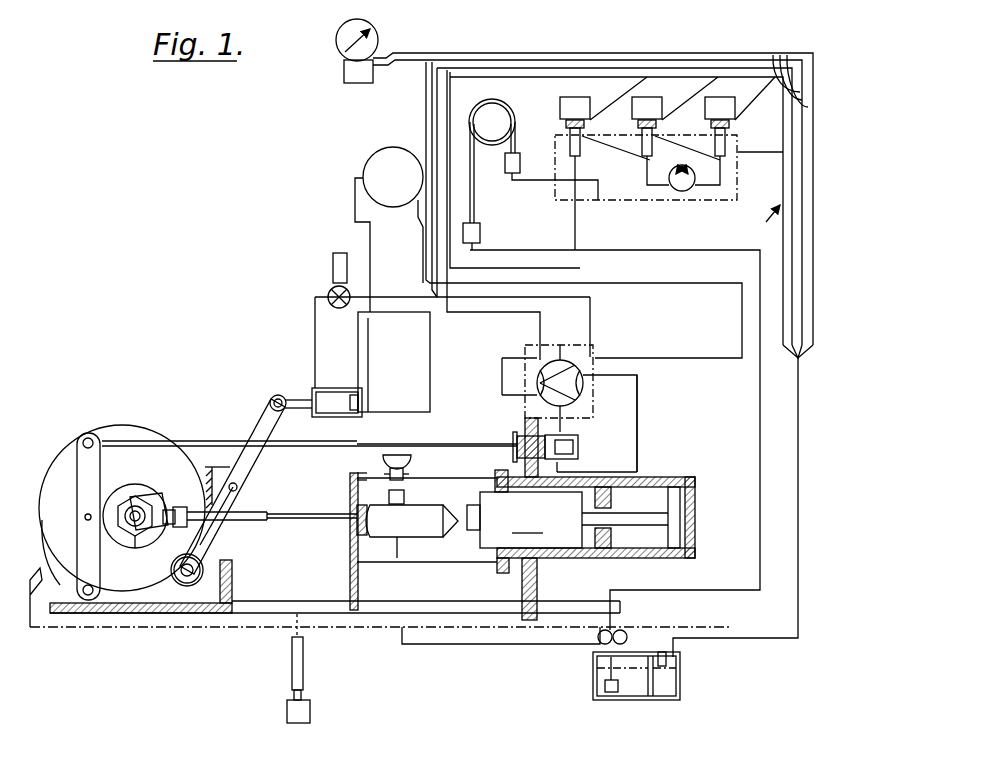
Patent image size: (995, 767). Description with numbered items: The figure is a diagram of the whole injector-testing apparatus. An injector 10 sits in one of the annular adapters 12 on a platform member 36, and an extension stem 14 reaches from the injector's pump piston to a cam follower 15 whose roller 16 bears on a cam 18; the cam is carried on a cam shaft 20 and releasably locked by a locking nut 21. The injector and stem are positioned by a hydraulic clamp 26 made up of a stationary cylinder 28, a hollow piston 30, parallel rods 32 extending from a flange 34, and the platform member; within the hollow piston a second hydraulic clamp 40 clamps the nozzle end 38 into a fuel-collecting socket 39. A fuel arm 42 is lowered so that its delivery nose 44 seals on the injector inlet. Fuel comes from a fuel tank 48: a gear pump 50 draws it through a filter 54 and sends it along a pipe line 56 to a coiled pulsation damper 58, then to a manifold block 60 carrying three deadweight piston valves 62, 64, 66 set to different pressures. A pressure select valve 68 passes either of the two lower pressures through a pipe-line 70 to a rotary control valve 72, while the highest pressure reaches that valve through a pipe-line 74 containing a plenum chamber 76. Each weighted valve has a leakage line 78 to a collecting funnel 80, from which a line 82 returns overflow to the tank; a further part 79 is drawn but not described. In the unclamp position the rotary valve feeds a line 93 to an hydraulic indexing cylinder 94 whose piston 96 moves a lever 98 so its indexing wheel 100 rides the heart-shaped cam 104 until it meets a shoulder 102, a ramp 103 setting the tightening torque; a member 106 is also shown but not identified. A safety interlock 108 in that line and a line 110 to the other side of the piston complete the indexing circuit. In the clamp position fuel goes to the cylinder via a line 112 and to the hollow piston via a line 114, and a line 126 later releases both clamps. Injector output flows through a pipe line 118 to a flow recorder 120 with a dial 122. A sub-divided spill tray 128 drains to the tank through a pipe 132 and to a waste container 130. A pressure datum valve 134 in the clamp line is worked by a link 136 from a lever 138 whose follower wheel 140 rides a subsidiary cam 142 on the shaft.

The injector 10 is at (413, 530).
The annular adapters 12 is at (368, 530).
The extension stem 14 is at (305, 512).
The cam follower 15 is at (254, 510).
The roller or wheel 16 is at (212, 466).
The cam 18 is at (142, 540).
The cam shaft 20 is at (137, 538).
The locking nut 21 is at (133, 527).
The hydraulic clamp 26 is at (672, 505).
The stationary cylinder 28 is at (590, 562).
The hollow piston 30 is at (537, 566).
The bars or rods 32 is at (362, 476).
The flange 34 is at (522, 600).
The platform member 36 is at (351, 556).
The nozzle or delivery end 38 is at (470, 498).
The fuel-collecting socket 39 is at (474, 532).
The second hydraulic clamp 40 is at (531, 520).
The fuel arm 42 is at (397, 453).
The delivery nose 44 is at (405, 497).
The fuel tank 48 is at (628, 700).
The gear pump 50 is at (626, 637).
The filter 54 is at (604, 686).
The pipe line 56 is at (628, 250).
The pulsation damper 58 is at (507, 100).
The manifold block 60 is at (553, 190).
The deadweight piston valve 62 is at (566, 133).
The deadweight piston valve 64 is at (652, 148).
The deadweight piston valve 66 is at (733, 130).
The pressure select valve 68 is at (691, 186).
The pipe-line 70 is at (566, 68).
The rotary control valve 72 is at (580, 392).
The pipe-line 74 is at (424, 150).
The plenum chamber 76 is at (368, 166).
The leakage line 78 is at (773, 58).
The line 79 is at (760, 199).
The collecting funnel 80 is at (805, 360).
The line 82 is at (798, 498).
The line 93 is at (355, 305).
The hydraulic indexing cylinder 94 is at (330, 388).
The piston 96 is at (362, 403).
The lever 98 is at (268, 410).
The indexing wheel 100 is at (203, 574).
The shoulder 102 is at (188, 584).
The ramp 103 is at (200, 552).
The heart-shaped cam 104 is at (148, 428).
The crank 106 is at (162, 495).
The safety valve or interlock 108 is at (331, 290).
The line 110 is at (362, 348).
The line 112 is at (612, 470).
The line 114 is at (505, 358).
The pipe line 118 is at (478, 432).
The flow recorder 120 is at (358, 83).
The dial 122 is at (376, 40).
The line 126 is at (640, 466).
The sub-divided spill tray 128 is at (40, 628).
The waste container 130 is at (310, 712).
The pipe 132 is at (460, 645).
The pressure datum valve 134 is at (578, 447).
The link 136 is at (296, 447).
The lever 138 is at (88, 433).
The follower wheel 140 is at (77, 480).
The subsidiary cam 142 is at (136, 484).